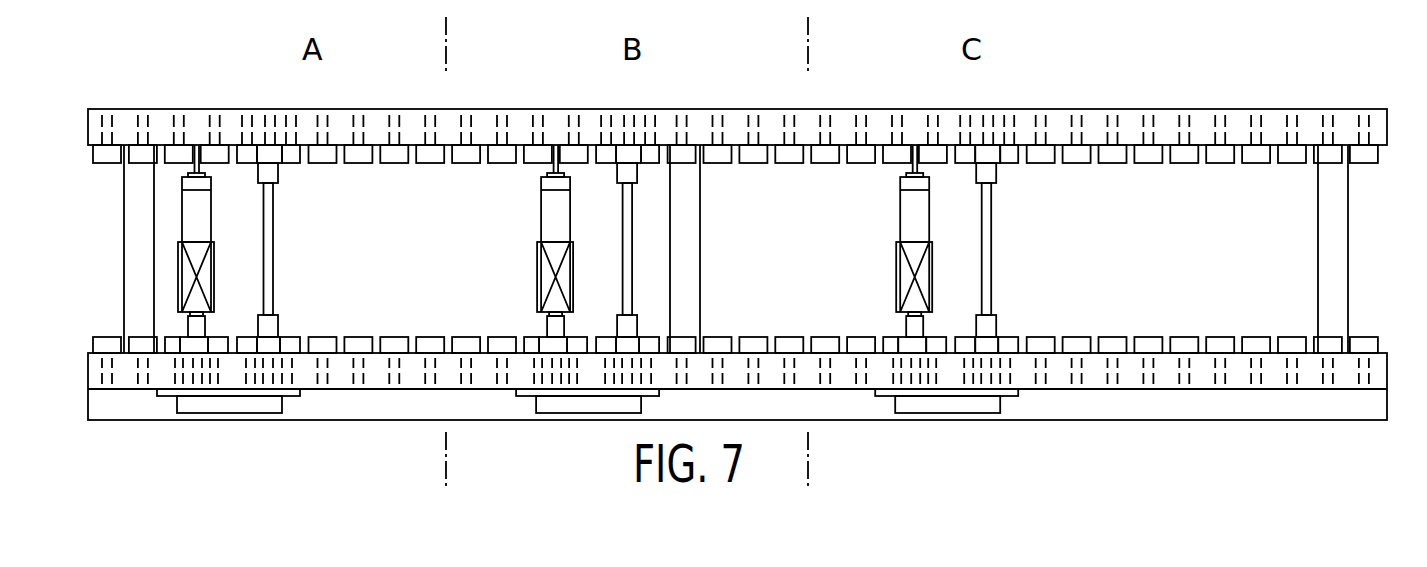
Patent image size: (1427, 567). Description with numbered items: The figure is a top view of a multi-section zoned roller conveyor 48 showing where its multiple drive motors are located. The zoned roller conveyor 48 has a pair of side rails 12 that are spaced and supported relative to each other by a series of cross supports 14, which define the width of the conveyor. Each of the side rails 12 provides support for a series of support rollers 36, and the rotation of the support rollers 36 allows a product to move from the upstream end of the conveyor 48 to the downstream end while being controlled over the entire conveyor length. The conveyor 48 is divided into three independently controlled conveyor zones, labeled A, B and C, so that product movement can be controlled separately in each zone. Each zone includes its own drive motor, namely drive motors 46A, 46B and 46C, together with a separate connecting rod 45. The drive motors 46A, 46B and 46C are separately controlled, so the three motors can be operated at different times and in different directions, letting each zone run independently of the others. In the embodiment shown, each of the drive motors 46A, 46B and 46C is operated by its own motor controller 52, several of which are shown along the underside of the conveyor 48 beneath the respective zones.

The side rails 12 is at (1065, 74).
The cross supports 14 is at (135, 248).
The support rollers 36 is at (1112, 165).
The connecting rod 45 is at (270, 297).
The drive motor 46A is at (200, 215).
The drive motor 46B is at (553, 220).
The drive motor 46C is at (913, 222).
The zoned roller conveyor 48 is at (680, 67).
The motor controller 52 is at (228, 402).